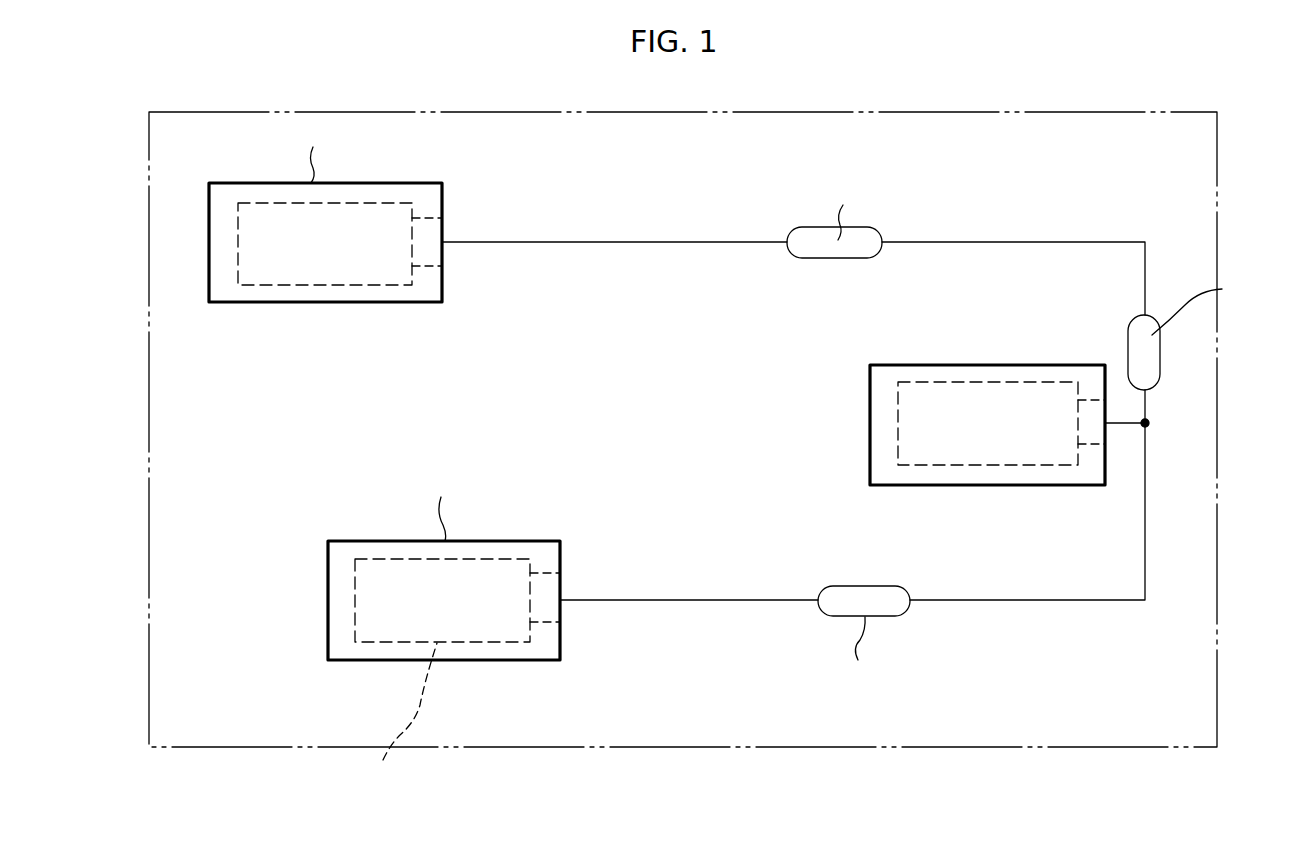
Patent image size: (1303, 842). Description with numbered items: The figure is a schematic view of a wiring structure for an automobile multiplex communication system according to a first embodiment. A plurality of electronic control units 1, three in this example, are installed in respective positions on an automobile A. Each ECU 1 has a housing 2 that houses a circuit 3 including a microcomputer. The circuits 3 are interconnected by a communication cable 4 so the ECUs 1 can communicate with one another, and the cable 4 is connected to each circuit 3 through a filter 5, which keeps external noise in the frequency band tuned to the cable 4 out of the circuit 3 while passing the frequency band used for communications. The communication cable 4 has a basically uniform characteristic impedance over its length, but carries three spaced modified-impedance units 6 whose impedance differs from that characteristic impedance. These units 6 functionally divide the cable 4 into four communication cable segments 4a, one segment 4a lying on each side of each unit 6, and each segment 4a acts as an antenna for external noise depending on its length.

The automobile A is at (940, 112).
The electronic control unit 1 is at (656, 455).
The housing 2 is at (385, 183).
The circuit 3 is at (312, 286).
The communication cable 4 is at (814, 401).
The communication cable segment 4a is at (650, 244).
The filter 5 is at (420, 222).
The modified-impedance unit 6 is at (845, 259).